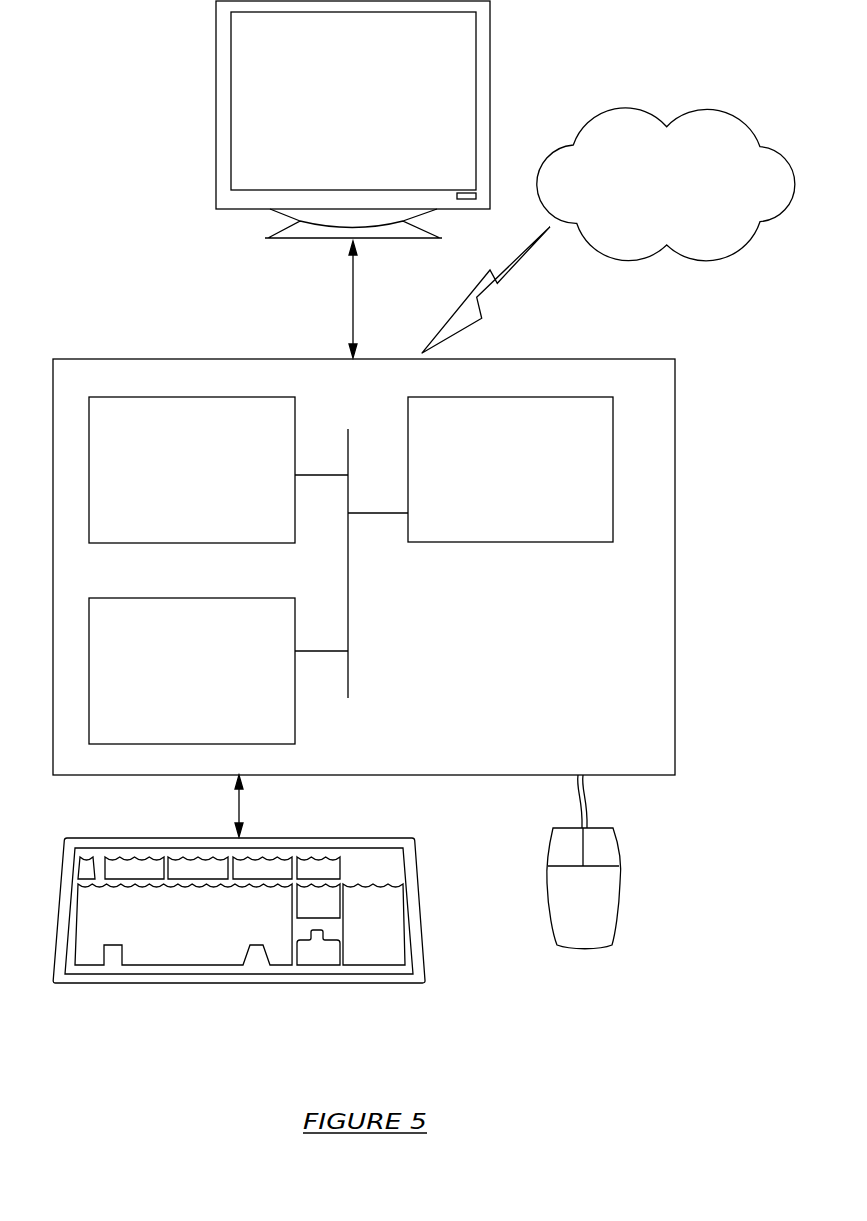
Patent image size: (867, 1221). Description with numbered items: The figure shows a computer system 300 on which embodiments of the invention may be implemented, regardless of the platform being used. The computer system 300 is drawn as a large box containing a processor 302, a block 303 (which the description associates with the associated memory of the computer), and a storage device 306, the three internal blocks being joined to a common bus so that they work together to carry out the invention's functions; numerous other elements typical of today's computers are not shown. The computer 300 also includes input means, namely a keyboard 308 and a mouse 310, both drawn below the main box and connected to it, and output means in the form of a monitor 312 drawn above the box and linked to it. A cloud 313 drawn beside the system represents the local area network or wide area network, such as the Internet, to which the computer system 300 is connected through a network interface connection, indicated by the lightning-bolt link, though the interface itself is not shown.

The computer system 300 is at (690, 570).
The processor 302 is at (495, 477).
The memory 303 is at (172, 479).
The storage device 306 is at (172, 681).
The keyboard 308 is at (155, 941).
The mouse 310 is at (566, 907).
The monitor 312 is at (333, 114).
The network 313 is at (653, 187).